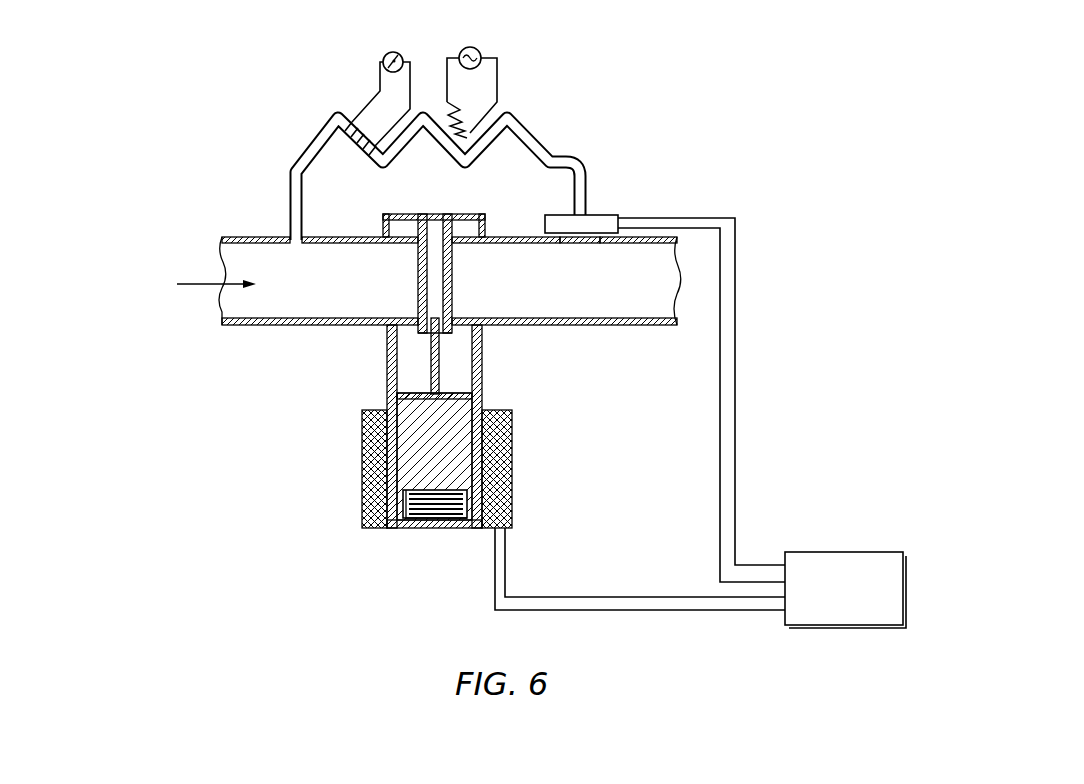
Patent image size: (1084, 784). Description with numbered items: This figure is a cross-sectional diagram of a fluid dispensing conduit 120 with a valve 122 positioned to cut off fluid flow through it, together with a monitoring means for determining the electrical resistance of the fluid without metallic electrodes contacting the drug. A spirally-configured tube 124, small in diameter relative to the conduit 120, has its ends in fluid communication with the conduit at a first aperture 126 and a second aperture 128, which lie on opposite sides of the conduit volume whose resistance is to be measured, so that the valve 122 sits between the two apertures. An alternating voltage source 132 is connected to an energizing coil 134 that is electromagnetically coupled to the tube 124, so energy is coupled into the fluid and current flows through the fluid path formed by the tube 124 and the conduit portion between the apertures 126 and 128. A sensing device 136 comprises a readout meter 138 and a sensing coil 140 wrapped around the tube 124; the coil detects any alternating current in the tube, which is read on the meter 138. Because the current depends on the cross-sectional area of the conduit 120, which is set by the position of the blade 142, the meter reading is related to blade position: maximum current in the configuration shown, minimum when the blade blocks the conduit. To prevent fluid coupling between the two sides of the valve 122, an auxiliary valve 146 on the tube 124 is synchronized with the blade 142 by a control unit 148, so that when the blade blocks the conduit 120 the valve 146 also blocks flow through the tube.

The conduit 120 is at (305, 327).
The valve 122 is at (492, 375).
The spirally-configured tube 124 is at (307, 158).
The first aperture 126 is at (296, 246).
The second aperture 128 is at (581, 245).
The alternating voltage source 132 is at (484, 53).
The energizing coil 134 is at (466, 139).
The sensing device 136 is at (370, 90).
The readout meter 138 is at (386, 54).
The sensing coil 140 is at (361, 152).
The blade 142 is at (431, 372).
The auxiliary valve 146 is at (614, 215).
The control unit 148 is at (851, 553).